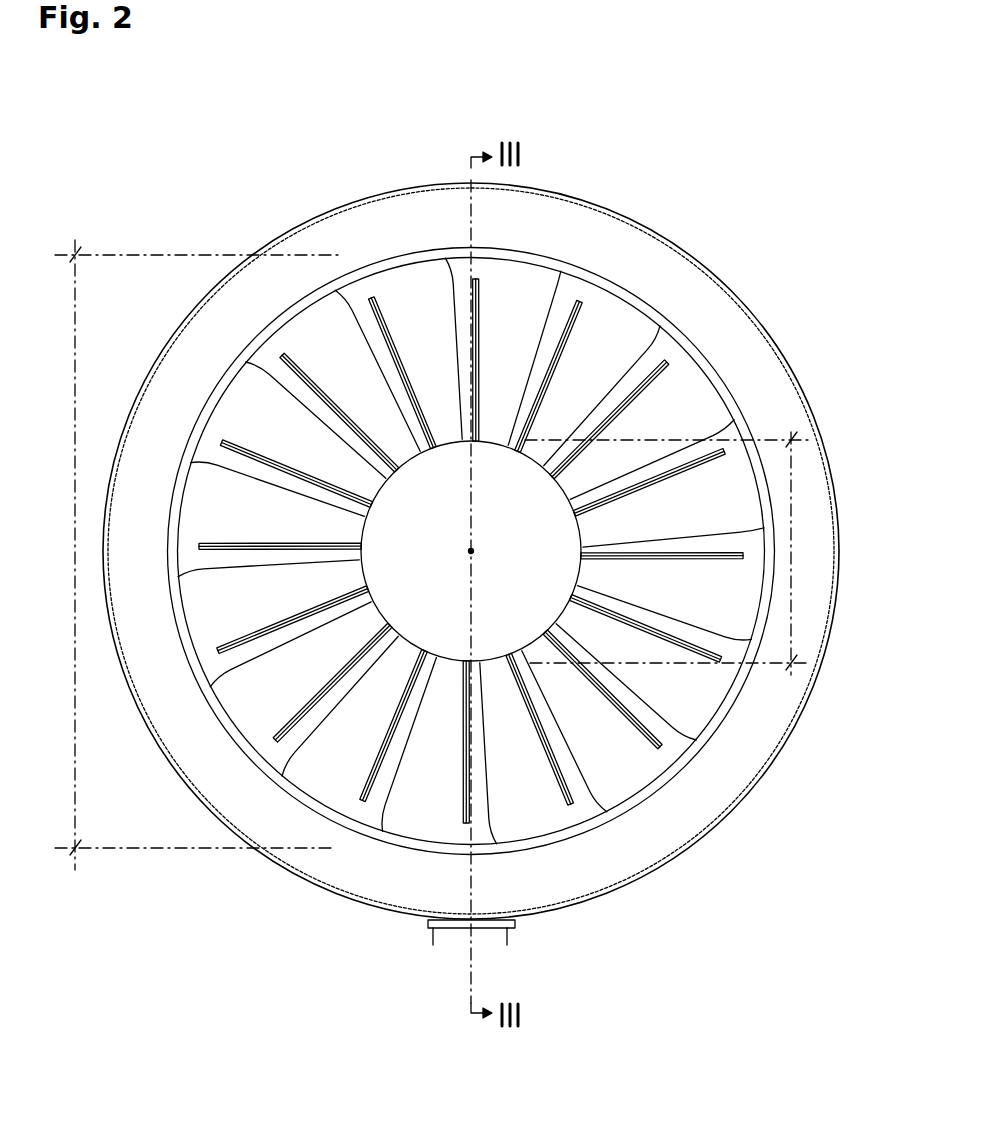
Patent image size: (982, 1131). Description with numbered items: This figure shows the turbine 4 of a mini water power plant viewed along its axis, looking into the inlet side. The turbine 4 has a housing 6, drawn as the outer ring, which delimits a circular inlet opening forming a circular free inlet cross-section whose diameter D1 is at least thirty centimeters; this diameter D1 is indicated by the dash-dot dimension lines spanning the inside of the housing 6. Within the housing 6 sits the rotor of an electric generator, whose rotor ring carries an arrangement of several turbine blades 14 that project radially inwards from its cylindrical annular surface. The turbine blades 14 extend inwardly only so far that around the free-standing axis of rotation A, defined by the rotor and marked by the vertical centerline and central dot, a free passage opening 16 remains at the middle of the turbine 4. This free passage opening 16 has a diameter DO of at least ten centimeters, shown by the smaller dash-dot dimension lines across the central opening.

The turbine 4 is at (363, 200).
The housing 6 is at (745, 349).
The turbine blades 14 is at (603, 348).
The free passage opening 16 is at (432, 608).
The axis of rotation A is at (480, 551).
The diameter of the free inlet cross-section D1 is at (75, 534).
The diameter of the free passage opening DO is at (792, 538).